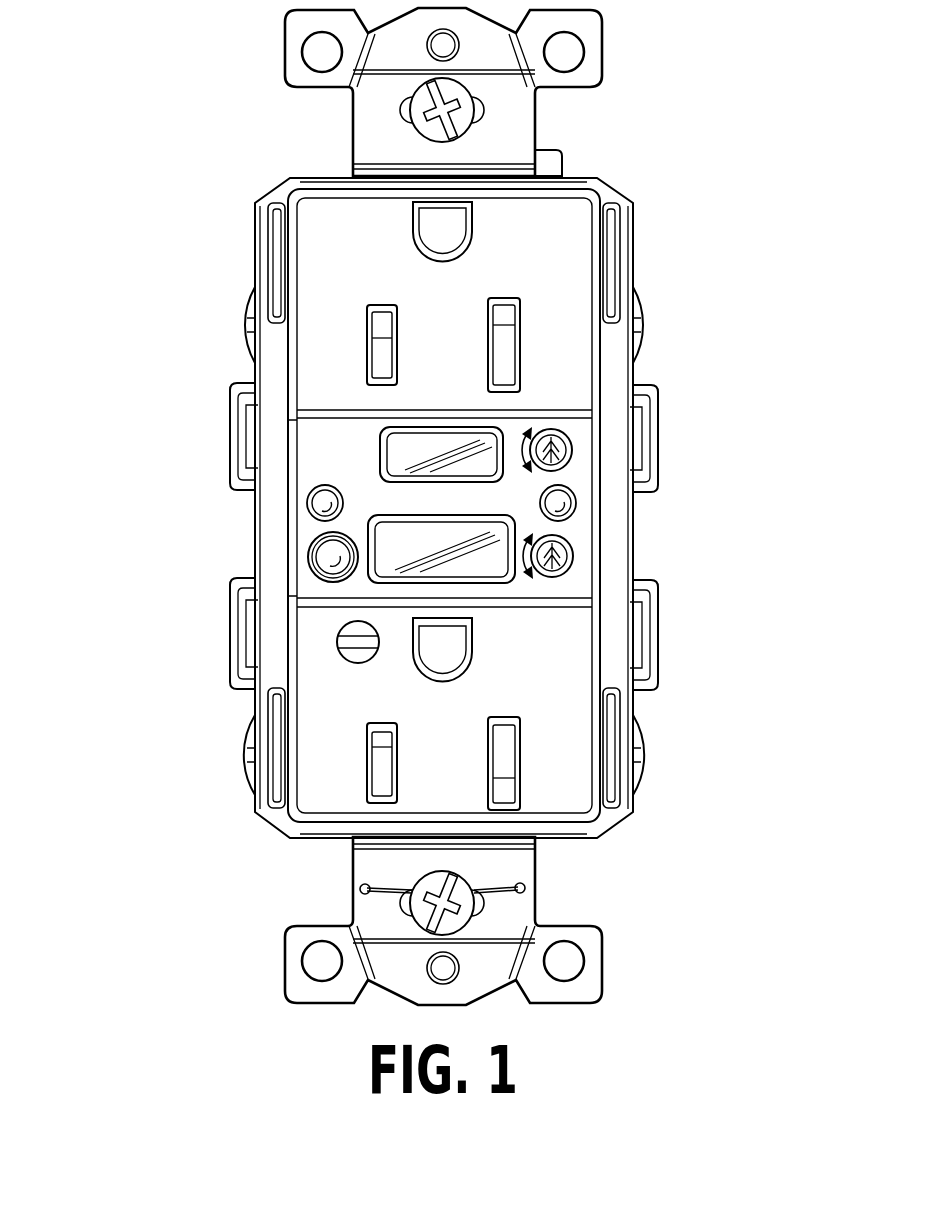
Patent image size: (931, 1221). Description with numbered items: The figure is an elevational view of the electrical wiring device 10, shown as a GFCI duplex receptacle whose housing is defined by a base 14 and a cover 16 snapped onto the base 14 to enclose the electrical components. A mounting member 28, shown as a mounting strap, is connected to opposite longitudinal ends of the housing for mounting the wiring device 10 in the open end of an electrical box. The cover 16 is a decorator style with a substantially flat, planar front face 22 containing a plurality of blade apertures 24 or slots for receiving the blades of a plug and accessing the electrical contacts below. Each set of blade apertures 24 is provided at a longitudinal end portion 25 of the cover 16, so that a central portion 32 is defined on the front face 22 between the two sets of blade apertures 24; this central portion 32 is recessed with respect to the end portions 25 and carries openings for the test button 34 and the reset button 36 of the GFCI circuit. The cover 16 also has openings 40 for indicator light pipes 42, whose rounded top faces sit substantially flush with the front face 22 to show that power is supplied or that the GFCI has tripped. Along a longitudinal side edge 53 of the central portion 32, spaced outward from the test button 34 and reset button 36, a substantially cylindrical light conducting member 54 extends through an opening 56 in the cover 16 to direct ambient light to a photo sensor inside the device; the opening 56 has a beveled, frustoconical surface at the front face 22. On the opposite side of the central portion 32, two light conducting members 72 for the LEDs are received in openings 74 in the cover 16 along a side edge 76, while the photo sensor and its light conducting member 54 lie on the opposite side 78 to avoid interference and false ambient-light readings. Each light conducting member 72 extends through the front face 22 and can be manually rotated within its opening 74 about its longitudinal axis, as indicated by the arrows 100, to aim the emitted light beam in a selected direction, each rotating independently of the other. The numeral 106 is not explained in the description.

The wiring device 10 is at (678, 281).
The base 14 is at (637, 815).
The cover 16 is at (612, 727).
The front face 22 is at (573, 380).
The blade apertures 24 is at (378, 335).
The longitudinal end portion 25 is at (325, 245).
The mounting member 28 is at (604, 52).
The central portion 32 is at (322, 459).
The test button 34 is at (418, 550).
The reset button 36 is at (427, 450).
The openings 40 is at (317, 505).
The indicator light pipes 42 is at (325, 506).
The longitudinal side edge 53 is at (283, 423).
The light conducting member 54 is at (325, 555).
The opening 56 is at (338, 580).
The light conducting members 72 is at (572, 432).
The openings 74 is at (580, 450).
The side edge 76 is at (631, 584).
The opposite side 78 is at (253, 483).
The arrows 100 is at (493, 568).
The rotation arrow 106 is at (518, 440).